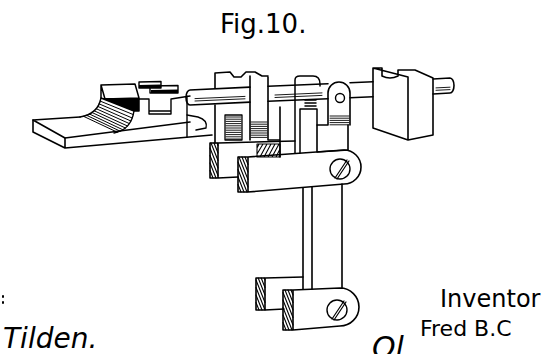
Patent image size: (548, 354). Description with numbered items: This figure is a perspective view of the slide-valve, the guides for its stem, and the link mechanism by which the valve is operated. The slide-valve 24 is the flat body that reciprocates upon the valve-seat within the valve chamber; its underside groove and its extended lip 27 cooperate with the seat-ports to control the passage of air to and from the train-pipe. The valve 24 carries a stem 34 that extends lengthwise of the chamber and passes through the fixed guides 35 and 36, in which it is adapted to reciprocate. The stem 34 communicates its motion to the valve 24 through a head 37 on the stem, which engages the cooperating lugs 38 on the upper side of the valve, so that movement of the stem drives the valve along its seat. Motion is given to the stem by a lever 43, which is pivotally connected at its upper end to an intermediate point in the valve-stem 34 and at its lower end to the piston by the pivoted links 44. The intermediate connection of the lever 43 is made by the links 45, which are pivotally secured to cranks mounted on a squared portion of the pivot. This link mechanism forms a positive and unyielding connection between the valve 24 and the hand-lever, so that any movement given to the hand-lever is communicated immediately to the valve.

The slide-valve 24 is at (111, 112).
The extended lip 27 is at (92, 143).
The stem 34 is at (357, 81).
The guide 35 is at (258, 73).
The guide 36 is at (393, 67).
The head 37 is at (133, 91).
The lugs 38 is at (107, 77).
The lever 43 is at (332, 230).
The pivoted links 44 is at (262, 308).
The links 45 is at (225, 172).